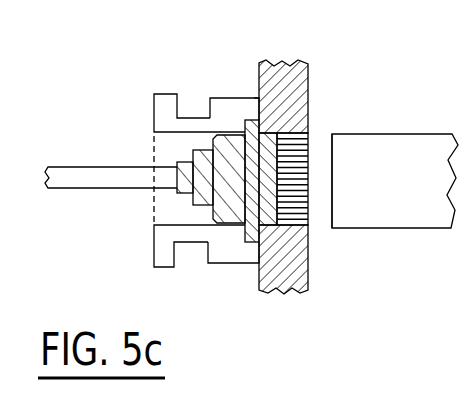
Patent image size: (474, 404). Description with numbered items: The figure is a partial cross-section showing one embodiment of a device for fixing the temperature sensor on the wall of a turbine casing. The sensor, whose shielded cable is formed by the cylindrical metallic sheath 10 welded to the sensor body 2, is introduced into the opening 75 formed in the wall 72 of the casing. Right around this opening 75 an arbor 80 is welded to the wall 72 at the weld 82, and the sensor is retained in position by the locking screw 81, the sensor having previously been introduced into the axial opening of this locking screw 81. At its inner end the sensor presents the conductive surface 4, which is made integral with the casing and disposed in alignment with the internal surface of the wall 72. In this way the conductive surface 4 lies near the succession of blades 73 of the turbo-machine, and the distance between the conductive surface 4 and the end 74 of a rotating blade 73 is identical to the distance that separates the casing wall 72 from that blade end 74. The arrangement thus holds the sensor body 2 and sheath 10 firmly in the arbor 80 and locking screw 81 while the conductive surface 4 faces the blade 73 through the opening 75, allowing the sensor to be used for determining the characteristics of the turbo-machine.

The sensor body 2 is at (181, 201).
The conductive surface 4 is at (311, 214).
The cylindrical metallic sheath 10 is at (100, 162).
The wall of the casing 72 is at (299, 82).
The blade 73 is at (418, 148).
The end of a rotating blade 74 is at (337, 196).
The opening 75 is at (301, 124).
The arbor 80 is at (226, 103).
The locking screw 81 is at (166, 100).
The weld 82 is at (255, 93).